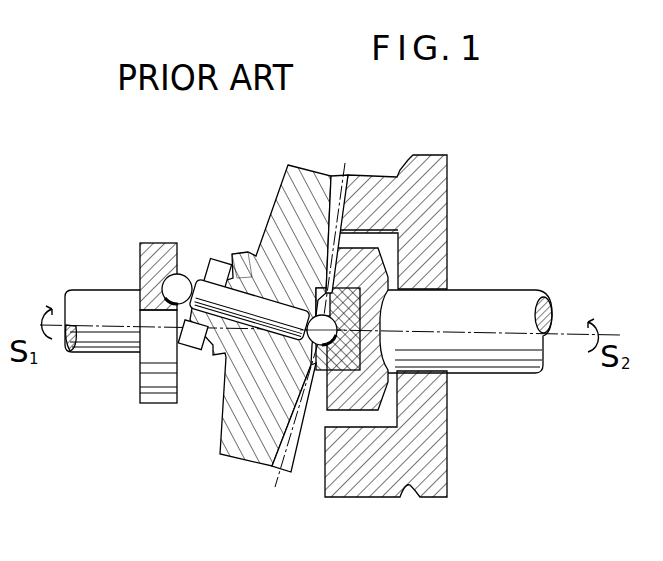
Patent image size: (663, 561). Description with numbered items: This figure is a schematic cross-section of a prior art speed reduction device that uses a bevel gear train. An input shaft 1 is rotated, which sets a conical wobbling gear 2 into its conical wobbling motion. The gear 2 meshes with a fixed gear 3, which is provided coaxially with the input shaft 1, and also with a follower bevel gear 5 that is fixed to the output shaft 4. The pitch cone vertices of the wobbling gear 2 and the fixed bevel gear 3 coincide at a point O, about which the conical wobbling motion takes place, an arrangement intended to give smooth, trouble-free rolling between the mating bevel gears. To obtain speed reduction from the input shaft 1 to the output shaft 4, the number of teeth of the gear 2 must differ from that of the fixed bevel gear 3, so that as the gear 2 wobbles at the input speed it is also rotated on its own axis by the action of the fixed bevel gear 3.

The input shaft 1 is at (117, 347).
The conical wobbling gear 2 is at (255, 453).
The fixed gear 3 is at (397, 470).
The output shaft 4 is at (522, 365).
The follower bevel gear 5 is at (353, 473).
The point O is at (250, 252).